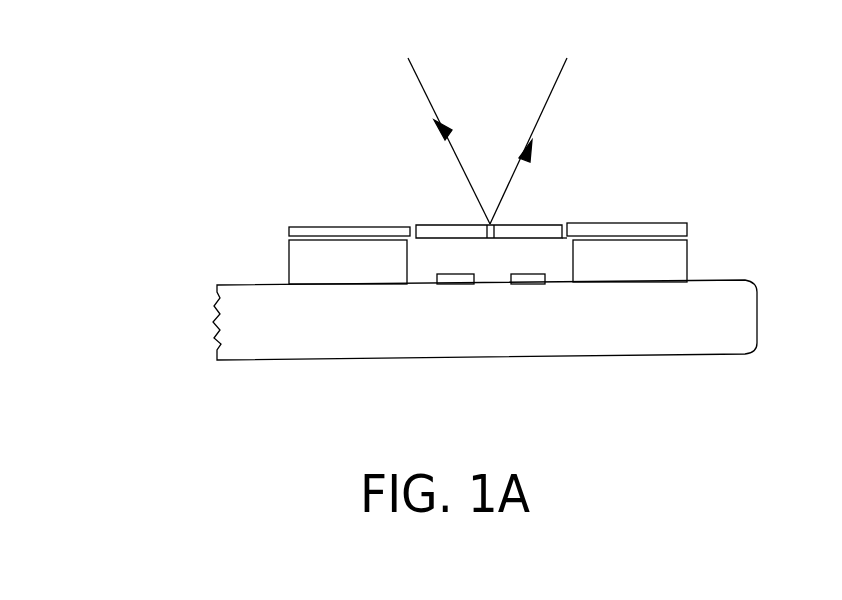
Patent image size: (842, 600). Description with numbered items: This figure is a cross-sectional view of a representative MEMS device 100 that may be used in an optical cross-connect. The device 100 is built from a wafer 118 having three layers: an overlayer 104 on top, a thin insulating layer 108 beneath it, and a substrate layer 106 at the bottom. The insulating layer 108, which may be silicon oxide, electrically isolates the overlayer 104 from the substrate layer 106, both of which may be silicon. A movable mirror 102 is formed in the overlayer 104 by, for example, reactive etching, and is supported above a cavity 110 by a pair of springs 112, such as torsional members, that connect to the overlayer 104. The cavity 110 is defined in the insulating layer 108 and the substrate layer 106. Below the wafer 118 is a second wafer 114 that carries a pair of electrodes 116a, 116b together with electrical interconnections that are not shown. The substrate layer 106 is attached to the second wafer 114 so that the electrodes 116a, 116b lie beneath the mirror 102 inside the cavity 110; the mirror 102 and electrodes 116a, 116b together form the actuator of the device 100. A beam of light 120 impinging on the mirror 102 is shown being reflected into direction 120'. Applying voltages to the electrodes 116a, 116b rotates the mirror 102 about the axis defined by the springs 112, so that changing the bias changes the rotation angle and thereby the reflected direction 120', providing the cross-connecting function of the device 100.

The MEMS device 100 is at (306, 421).
The movable mirror 102 is at (517, 230).
The overlayer 104 is at (314, 228).
The substrate layer 106 is at (678, 258).
The insulating layer 108 is at (688, 232).
The cavity 110 is at (545, 248).
The springs 112 is at (487, 224).
The second wafer 114 is at (658, 340).
The electrode 116a is at (457, 284).
The electrode 116b is at (526, 284).
The wafer 118 is at (212, 208).
The beam of light 120 is at (436, 126).
The redirected beam direction 120' is at (542, 126).